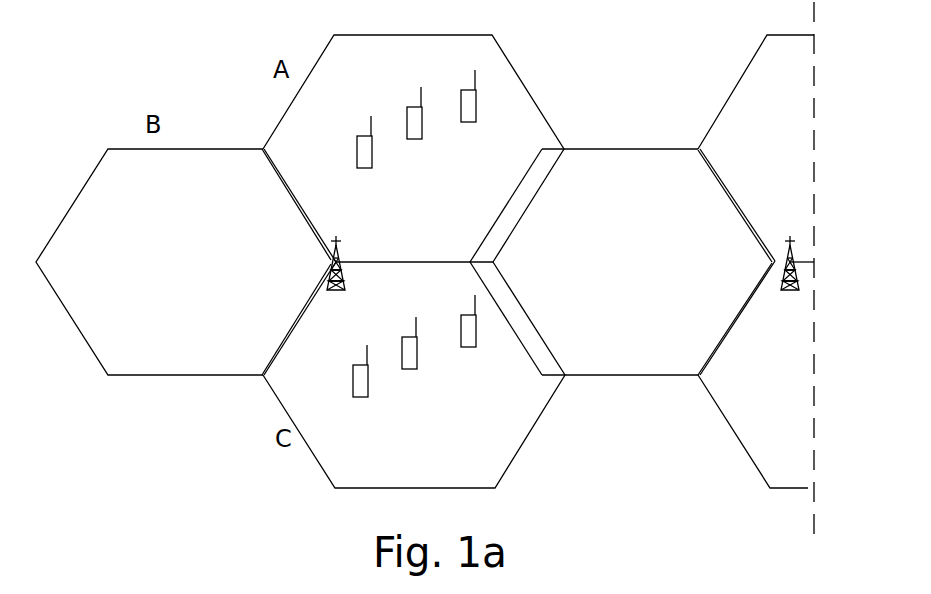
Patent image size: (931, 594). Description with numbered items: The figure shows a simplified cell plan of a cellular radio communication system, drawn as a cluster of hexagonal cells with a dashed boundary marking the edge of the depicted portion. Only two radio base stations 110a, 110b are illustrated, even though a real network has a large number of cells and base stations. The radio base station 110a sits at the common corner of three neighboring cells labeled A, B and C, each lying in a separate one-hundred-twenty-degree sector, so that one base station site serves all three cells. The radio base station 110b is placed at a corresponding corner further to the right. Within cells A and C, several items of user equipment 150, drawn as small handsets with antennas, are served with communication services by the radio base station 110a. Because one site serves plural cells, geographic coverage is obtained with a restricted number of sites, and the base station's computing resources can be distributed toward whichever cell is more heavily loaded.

The radio base station 110a is at (295, 265).
The radio base station 110b is at (748, 264).
The user equipment 150 is at (430, 259).